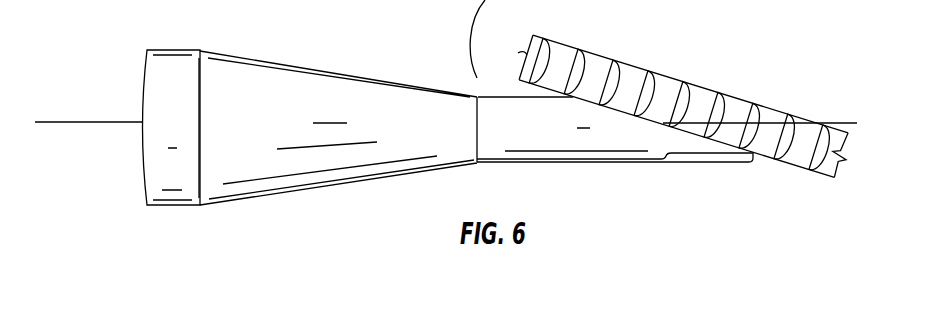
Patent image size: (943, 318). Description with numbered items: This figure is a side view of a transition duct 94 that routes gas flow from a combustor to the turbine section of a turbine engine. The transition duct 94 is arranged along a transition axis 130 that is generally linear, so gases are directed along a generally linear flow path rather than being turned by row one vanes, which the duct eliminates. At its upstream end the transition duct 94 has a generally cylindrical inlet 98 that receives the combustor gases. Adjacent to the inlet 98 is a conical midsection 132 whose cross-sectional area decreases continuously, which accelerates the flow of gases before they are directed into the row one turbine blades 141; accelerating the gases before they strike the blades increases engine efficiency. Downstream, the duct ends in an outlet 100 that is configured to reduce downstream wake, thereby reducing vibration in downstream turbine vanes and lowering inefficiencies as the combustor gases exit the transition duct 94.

The cylindrical inlet 98 is at (141, 103).
The conical midsection 132 is at (478, 96).
The transition duct 94 is at (600, 207).
The outlet 100 is at (768, 48).
The transition axis 130 is at (838, 121).
The row one turbine blades 141 is at (758, 115).